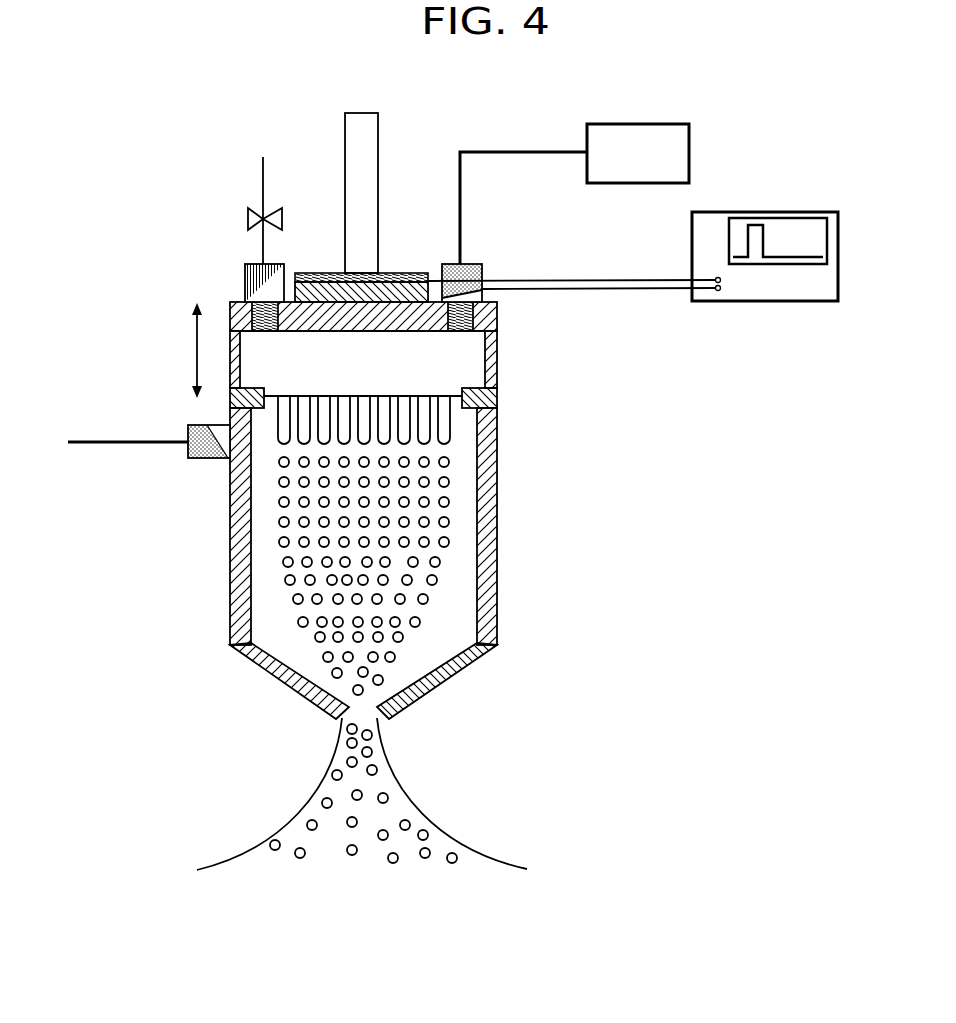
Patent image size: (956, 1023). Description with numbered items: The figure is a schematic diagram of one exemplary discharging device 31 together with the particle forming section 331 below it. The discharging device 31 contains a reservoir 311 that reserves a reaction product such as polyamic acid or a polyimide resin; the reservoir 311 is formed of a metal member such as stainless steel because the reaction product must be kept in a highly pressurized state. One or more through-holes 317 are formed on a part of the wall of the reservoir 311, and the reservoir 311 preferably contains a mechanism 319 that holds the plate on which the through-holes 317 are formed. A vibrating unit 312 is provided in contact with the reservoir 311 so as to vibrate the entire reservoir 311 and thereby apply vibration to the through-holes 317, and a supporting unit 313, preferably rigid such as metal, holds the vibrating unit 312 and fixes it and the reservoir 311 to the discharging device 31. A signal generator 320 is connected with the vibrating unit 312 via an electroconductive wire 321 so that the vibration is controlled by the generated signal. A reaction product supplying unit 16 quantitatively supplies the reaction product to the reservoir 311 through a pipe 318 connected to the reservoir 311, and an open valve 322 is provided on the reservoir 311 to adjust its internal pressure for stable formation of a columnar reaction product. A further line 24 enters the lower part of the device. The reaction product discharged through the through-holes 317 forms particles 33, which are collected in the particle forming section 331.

The reaction product supplying unit 16 is at (689, 152).
The gas supply pipe 24 is at (132, 446).
The discharging device 31 is at (535, 368).
The particles 33 is at (451, 520).
The reservoir 311 is at (473, 346).
The vibrating unit 312 is at (404, 287).
The supporting unit 313 is at (380, 124).
The through-holes 317 is at (449, 406).
The pipe 318 is at (537, 160).
The mechanism 319 is at (497, 400).
The signal generator 320 is at (765, 298).
The electroconductive wire 321 is at (605, 291).
The open valve 322 is at (248, 213).
The particle forming section 331 is at (447, 615).